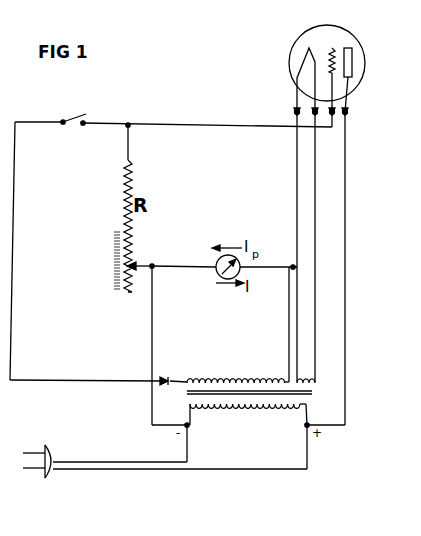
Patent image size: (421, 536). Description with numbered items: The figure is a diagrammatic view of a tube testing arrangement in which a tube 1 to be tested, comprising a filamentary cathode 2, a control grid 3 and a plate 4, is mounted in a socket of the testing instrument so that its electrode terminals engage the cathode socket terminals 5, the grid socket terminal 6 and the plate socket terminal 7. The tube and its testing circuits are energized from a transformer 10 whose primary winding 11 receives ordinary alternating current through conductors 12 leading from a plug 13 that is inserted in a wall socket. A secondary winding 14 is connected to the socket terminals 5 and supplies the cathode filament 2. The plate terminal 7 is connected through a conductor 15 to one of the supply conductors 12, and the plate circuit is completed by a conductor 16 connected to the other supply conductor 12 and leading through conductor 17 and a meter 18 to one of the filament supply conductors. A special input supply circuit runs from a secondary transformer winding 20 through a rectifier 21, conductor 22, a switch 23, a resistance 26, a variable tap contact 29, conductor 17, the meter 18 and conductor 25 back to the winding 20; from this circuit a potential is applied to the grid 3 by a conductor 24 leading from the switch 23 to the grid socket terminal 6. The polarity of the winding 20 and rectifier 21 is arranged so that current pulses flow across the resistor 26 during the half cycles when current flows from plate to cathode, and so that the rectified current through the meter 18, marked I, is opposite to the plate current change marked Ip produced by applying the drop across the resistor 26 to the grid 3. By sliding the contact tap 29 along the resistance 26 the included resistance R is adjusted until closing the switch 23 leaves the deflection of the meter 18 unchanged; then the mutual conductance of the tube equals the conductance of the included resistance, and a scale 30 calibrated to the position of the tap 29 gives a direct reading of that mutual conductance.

The tube 1 is at (353, 60).
The filamentary cathode 2 is at (300, 71).
The control grid 3 is at (334, 50).
The plate 4 is at (352, 70).
The cathode socket terminals 5 is at (300, 116).
The grid socket terminal 6 is at (334, 116).
The plate socket terminal 7 is at (347, 116).
The transformer 10 is at (257, 397).
The primary winding 11 is at (284, 406).
The conductors 12 is at (152, 469).
The plug 13 is at (50, 472).
The secondary winding 14 is at (309, 385).
The conductor 15 is at (343, 408).
The conductor 16 is at (147, 405).
The conductor 17 is at (180, 266).
The meter 18 is at (216, 272).
The secondary transformer winding 20 is at (231, 384).
The rectifier 21 is at (170, 369).
The conductor 22 is at (11, 278).
The switch 23 is at (73, 116).
The conductor 24 is at (193, 127).
The conductor 25 is at (288, 339).
The resistance 26 is at (132, 172).
The variable tap contact 29 is at (146, 261).
The scale 30 is at (116, 273).